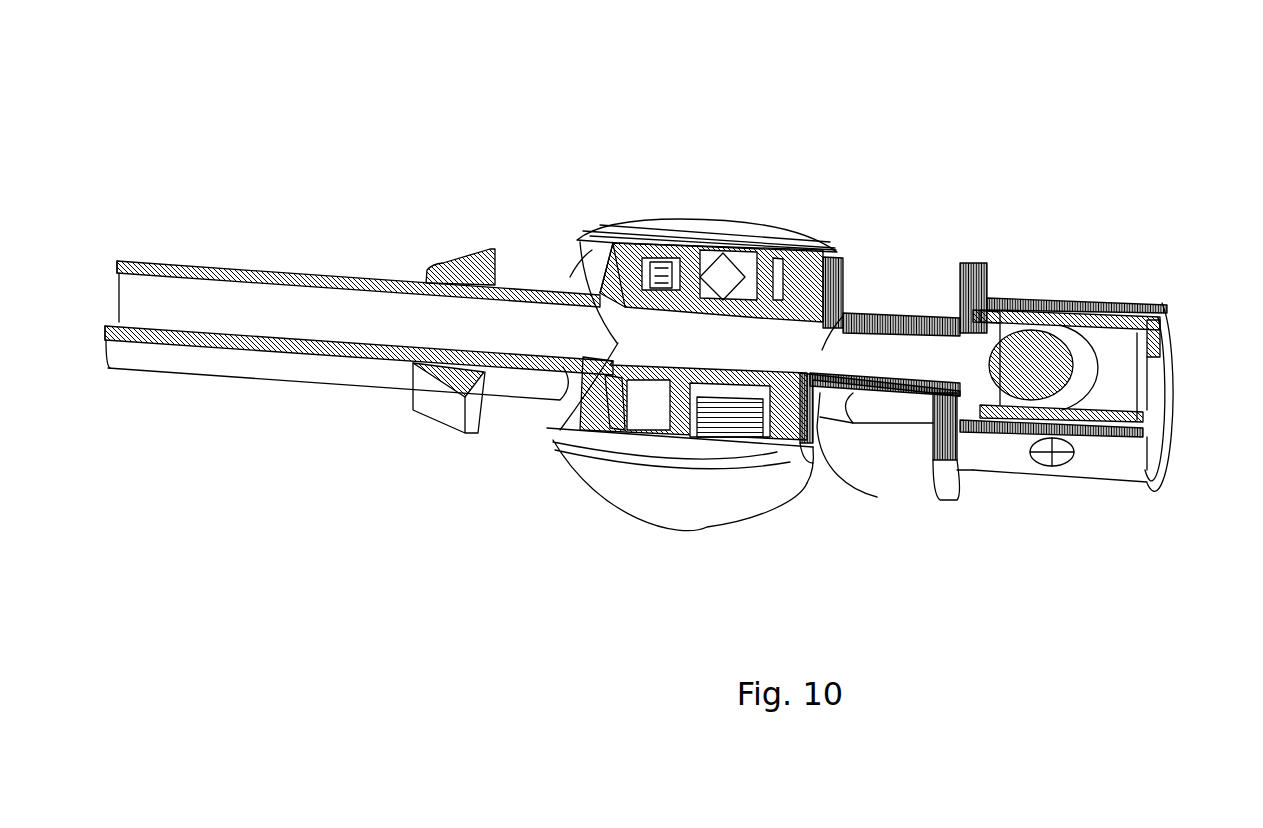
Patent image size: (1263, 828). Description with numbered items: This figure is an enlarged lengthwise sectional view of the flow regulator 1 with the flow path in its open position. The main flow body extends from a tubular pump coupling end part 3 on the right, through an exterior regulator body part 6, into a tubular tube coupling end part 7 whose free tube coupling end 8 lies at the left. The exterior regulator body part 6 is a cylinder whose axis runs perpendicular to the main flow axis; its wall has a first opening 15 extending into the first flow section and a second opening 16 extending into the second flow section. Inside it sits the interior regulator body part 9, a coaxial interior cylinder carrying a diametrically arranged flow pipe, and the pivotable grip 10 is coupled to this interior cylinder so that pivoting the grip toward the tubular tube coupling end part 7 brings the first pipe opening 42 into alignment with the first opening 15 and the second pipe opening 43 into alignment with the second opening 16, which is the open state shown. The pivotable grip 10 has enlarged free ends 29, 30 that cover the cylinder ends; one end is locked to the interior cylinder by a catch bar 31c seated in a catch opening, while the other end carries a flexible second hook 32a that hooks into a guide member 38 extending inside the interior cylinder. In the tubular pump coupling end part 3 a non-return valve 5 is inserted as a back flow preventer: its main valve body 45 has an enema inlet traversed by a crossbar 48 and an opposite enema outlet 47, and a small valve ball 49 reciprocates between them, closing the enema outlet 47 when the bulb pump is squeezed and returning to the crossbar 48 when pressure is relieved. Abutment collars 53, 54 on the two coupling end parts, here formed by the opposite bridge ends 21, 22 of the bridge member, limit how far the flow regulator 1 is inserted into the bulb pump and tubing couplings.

The flow regulator 1 is at (492, 172).
The tubular pump coupling end part 3 is at (1028, 298).
The non-return valve 5 is at (1147, 317).
The exterior regulator body part 6 is at (830, 420).
The tubular tube coupling end part 7 is at (240, 268).
The free tube coupling end 8 is at (117, 310).
The interior regulator body part 9 is at (773, 300).
The pivotable grip 10 is at (687, 230).
The first opening 15 is at (880, 317).
The second opening 16 is at (613, 343).
The bridge end 21 is at (933, 507).
The bridge end 22 is at (440, 423).
The enlarged free end 29 is at (718, 518).
The enlarged free end 30 is at (698, 233).
The catch bar 31c is at (737, 430).
The flexible second hook 32a is at (703, 250).
The guide member 38 is at (737, 428).
The first pipe opening 42 is at (863, 317).
The second pipe opening 43 is at (605, 378).
The main valve body 45 is at (1103, 317).
The enema outlet 47 is at (1165, 365).
The crossbar 48 is at (990, 440).
The valve ball 49 is at (1145, 440).
The abutment collar 53 is at (965, 260).
The abutment collar 54 is at (433, 263).